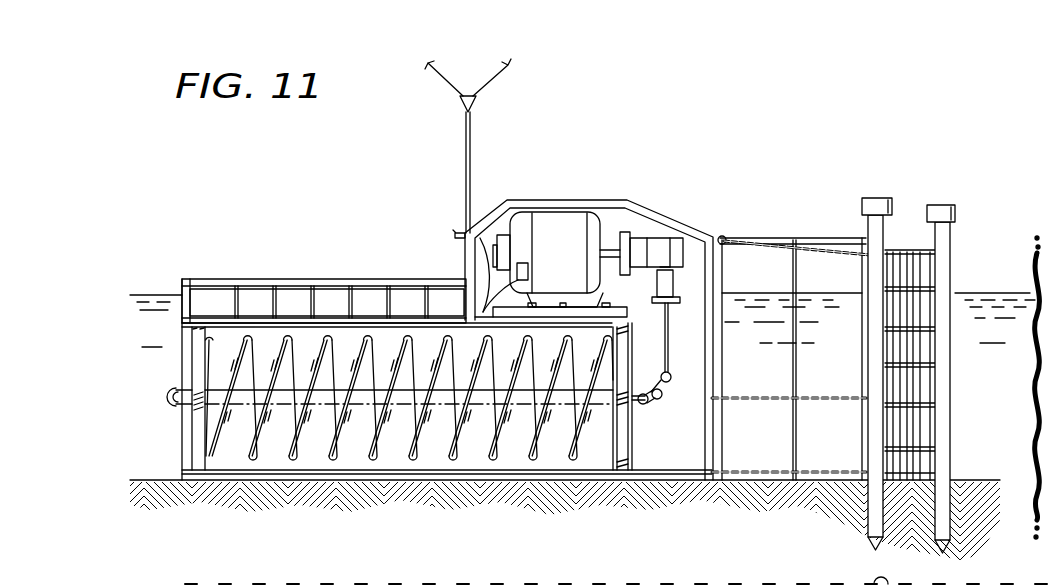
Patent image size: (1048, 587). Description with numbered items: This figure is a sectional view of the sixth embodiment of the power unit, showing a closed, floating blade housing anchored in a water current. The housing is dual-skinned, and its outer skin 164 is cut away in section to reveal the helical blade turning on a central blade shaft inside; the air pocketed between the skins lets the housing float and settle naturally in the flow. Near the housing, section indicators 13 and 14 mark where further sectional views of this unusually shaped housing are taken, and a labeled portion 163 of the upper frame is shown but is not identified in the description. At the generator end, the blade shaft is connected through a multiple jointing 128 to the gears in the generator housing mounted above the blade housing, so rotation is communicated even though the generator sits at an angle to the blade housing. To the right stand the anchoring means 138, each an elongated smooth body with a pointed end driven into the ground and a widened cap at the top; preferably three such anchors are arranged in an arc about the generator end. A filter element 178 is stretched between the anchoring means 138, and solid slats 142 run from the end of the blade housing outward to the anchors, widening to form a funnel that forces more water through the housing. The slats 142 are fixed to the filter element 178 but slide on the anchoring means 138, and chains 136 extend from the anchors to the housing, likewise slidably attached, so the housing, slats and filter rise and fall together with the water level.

The section line 13- 13 is at (562, 155).
The section line 14- 14 is at (302, 270).
The multiple jointing 128 is at (661, 401).
The chains 136 is at (800, 585).
The anchoring means 138 is at (950, 225).
The slats 142 is at (786, 237).
The grating panel 163 is at (213, 318).
The outer skin 164 is at (183, 278).
The filter element 178 is at (917, 383).